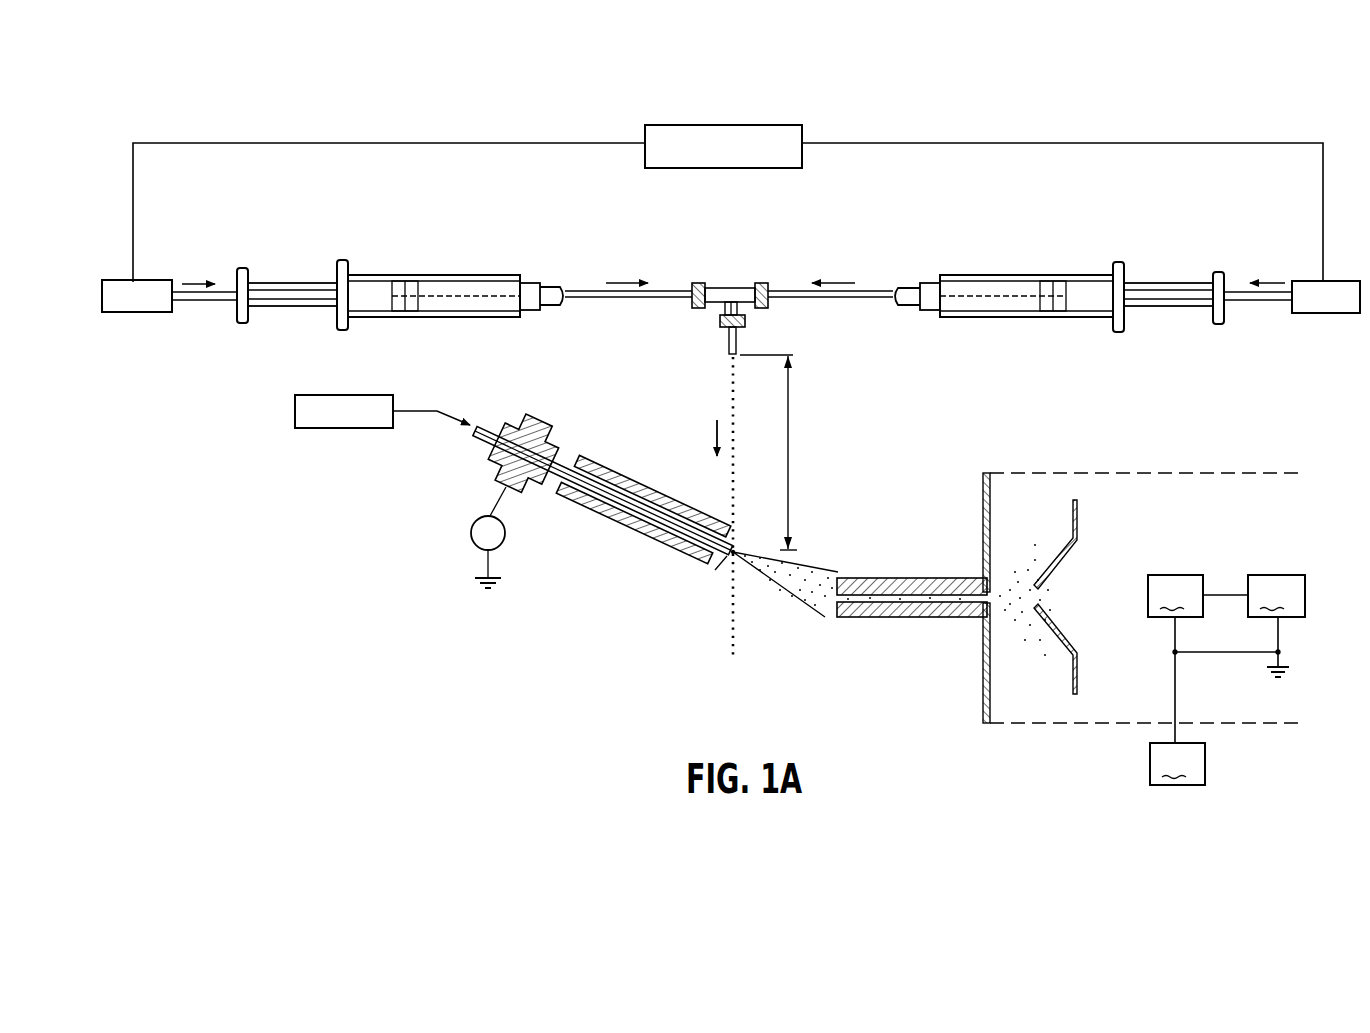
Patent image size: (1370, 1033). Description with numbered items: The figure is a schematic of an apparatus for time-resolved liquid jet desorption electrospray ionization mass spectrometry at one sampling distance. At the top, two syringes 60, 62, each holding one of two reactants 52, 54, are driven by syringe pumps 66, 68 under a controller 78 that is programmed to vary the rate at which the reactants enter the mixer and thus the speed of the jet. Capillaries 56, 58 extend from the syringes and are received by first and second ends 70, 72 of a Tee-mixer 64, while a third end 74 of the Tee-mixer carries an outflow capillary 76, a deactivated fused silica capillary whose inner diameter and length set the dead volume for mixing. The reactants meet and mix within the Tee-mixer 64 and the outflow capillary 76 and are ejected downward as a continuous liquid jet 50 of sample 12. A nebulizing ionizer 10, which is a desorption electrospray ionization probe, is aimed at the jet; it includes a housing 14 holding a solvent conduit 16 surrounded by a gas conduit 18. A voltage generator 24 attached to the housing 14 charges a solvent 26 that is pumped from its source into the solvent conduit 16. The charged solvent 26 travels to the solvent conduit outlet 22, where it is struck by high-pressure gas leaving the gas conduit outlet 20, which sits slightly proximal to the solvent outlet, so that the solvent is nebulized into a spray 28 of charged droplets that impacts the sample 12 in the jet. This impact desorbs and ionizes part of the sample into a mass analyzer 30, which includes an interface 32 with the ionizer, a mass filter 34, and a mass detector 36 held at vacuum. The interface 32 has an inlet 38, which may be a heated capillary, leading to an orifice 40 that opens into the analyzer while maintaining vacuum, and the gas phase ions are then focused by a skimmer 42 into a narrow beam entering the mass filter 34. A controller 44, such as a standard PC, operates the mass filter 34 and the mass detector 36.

The nebulizing ionizer 10 is at (430, 536).
The sample 12 is at (735, 414).
The housing 14 is at (524, 453).
The solvent conduit 16 is at (642, 498).
The gas conduit 18 is at (643, 509).
The outlet of the gas conduit 20 is at (720, 570).
The outlet of the solvent conduit 22 is at (735, 551).
The voltage generator 24 is at (473, 519).
The solvent 26 is at (326, 394).
The spray 28 is at (737, 560).
The mass analyzer 30 is at (1147, 603).
The interface 32 is at (927, 598).
The mass filter 34 is at (1175, 596).
The mass detector 36 is at (1276, 596).
The inlet 38 is at (907, 596).
The orifice 40 is at (993, 600).
The skimmer 42 is at (1079, 518).
The controller 44 is at (1177, 764).
The liquid jet 50 is at (722, 396).
The first reactant 52 is at (462, 285).
The second reactant 54 is at (973, 290).
The first capillary 56 is at (582, 290).
The second capillary 58 is at (787, 293).
The first syringe 60 is at (367, 266).
The second syringe 62 is at (1093, 267).
The Tee-mixer 64 is at (732, 303).
The first syringe pump 66 is at (154, 282).
The second syringe pump 68 is at (1308, 282).
The first end of the Tee-mixer 70 is at (692, 303).
The second end of the Tee-mixer 72 is at (770, 302).
The third end of the Tee-mixer 74 is at (722, 338).
The outflow capillary 76 is at (738, 340).
The controller 78 is at (778, 126).